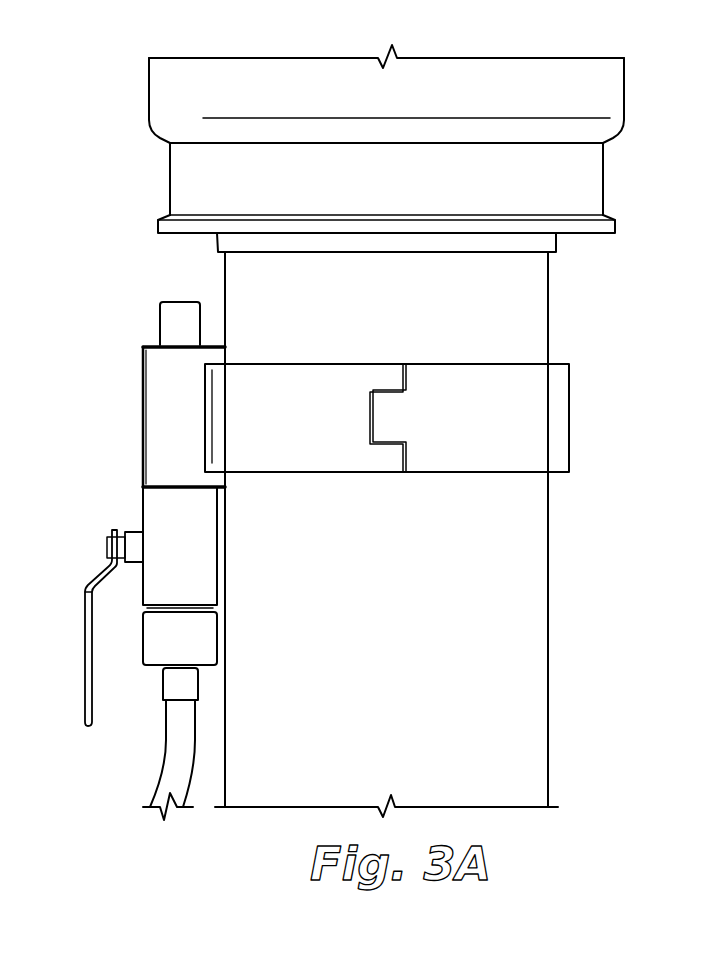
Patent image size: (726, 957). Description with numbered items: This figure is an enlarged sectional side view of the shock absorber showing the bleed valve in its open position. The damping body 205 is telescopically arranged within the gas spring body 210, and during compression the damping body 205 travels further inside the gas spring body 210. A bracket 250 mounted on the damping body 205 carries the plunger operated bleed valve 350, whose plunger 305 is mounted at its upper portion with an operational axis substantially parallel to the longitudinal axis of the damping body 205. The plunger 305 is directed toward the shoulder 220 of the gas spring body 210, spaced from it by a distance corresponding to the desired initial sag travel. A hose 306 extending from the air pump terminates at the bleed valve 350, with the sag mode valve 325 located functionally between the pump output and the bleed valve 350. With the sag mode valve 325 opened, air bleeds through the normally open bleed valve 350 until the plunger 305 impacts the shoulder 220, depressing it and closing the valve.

The gas spring body 210 is at (603, 177).
The shoulder 220 is at (180, 235).
The damping body 205 is at (549, 640).
The bracket 250 is at (569, 413).
The plunger 305 is at (160, 320).
The bleed valve 350 is at (143, 420).
The sag mode valve 325 is at (143, 494).
The hose 306 is at (163, 770).